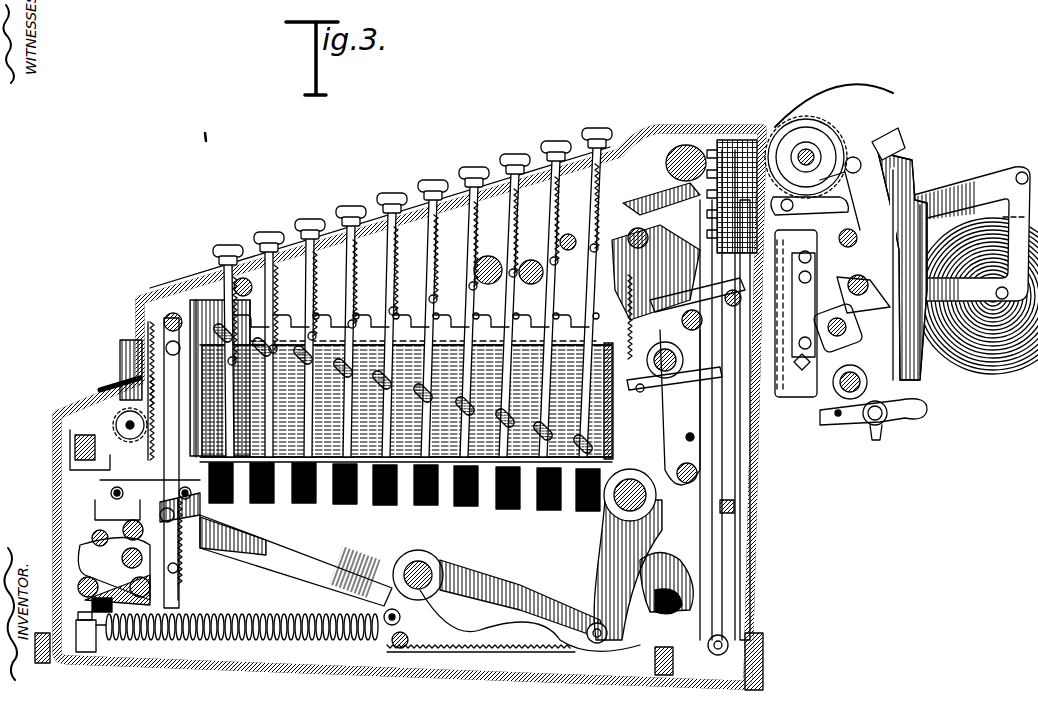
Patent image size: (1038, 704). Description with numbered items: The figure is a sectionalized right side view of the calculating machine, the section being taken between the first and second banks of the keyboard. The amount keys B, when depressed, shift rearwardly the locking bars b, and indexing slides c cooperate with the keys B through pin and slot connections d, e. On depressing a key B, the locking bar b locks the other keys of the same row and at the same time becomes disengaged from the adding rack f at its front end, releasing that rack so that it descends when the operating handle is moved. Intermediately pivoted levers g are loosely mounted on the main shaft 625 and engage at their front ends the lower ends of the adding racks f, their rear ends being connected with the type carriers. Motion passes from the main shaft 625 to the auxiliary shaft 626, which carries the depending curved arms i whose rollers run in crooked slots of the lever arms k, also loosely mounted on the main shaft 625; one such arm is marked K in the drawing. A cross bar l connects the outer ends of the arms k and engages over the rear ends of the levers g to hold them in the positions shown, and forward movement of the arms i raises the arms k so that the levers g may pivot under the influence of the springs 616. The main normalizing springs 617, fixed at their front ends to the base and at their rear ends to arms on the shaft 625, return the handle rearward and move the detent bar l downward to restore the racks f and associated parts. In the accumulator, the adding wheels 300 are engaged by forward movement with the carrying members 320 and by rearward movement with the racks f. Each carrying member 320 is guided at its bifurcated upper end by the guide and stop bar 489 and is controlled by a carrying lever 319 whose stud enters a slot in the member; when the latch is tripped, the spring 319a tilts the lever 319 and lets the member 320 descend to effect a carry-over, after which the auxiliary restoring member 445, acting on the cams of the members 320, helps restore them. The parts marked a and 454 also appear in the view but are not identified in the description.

The amount keys B is at (433, 174).
The adding rack f is at (150, 340).
The adding wheels 300 is at (130, 382).
The guide and stop bar 489 is at (70, 456).
The carrying member 320 is at (100, 492).
The link 454 is at (95, 503).
The auxiliary restoring member 445 is at (80, 540).
The carrying lever 319 is at (176, 590).
The spring 319a is at (197, 545).
The main normalizing springs 617 is at (242, 620).
The intermediately pivoted levers g is at (342, 550).
The main shaft 625 is at (425, 573).
The link K is at (566, 620).
The springs 616 is at (490, 642).
The auxiliary shaft 626 is at (660, 522).
The depending curved arms i is at (676, 578).
The cross bar l is at (682, 604).
The lever arms k is at (752, 452).
The indexing slides c is at (401, 391).
The key lever roller a is at (462, 386).
The locking bars b is at (331, 334).
The pin and slot connection d is at (553, 428).
The pin and slot connection e is at (527, 398).